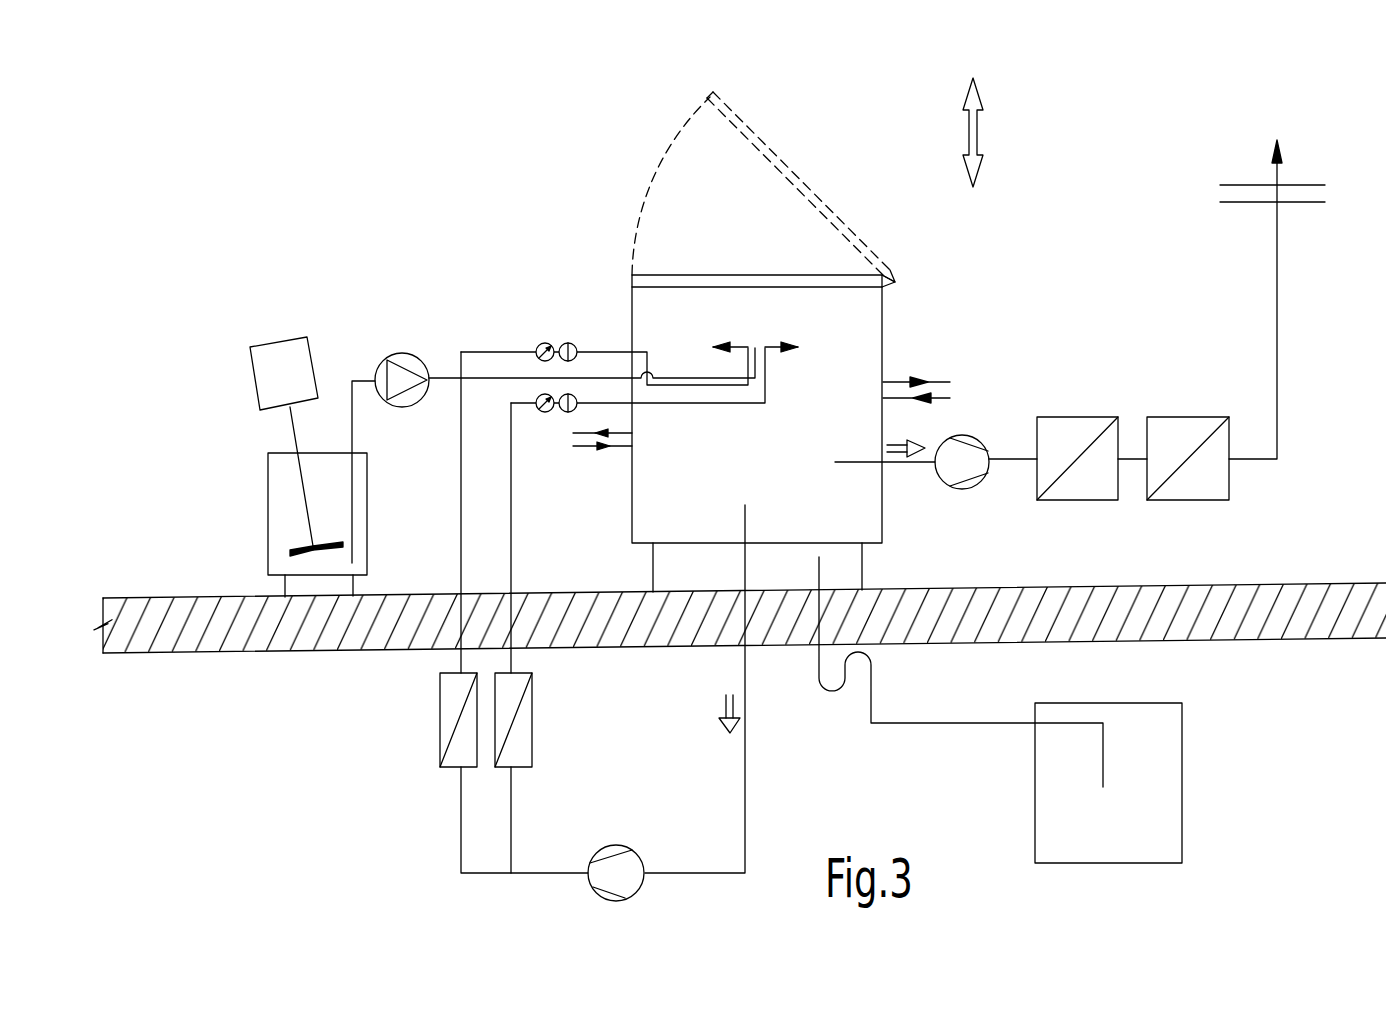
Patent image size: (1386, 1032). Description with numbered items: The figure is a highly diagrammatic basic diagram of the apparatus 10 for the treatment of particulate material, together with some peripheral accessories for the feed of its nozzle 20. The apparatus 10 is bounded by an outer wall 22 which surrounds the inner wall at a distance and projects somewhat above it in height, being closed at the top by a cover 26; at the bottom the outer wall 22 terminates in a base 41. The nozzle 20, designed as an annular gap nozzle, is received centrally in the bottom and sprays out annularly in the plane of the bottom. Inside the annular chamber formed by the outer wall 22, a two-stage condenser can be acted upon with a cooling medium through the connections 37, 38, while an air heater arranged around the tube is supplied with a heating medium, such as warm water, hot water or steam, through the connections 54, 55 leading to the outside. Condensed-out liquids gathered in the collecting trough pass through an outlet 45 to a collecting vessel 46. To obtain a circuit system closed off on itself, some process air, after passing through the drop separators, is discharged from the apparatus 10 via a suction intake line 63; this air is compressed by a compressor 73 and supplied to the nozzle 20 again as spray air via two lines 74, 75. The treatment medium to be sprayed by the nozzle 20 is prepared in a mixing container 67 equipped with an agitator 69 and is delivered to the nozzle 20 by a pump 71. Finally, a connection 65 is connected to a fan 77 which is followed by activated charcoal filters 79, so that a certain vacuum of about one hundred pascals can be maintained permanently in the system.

The apparatus 10 is at (715, 305).
The nozzle 20 is at (760, 345).
The outer wall 22 is at (890, 318).
The cover 26 is at (793, 167).
The connection 37 is at (578, 433).
The connection 38 is at (617, 448).
The base 41 is at (653, 568).
The outlet 45 is at (822, 572).
The collecting vessel 46 is at (1150, 813).
The connection 54 is at (900, 380).
The connection 55 is at (903, 400).
The suction intake line 63 is at (745, 565).
The connection 65 is at (900, 463).
The mixing container 67 is at (285, 487).
The agitator 69 is at (272, 377).
The pump 71 is at (402, 352).
The compressor 73 is at (615, 852).
The line 74 is at (595, 400).
The line 75 is at (610, 350).
The fan 77 is at (975, 480).
The activated charcoal filters 79 is at (1077, 433).